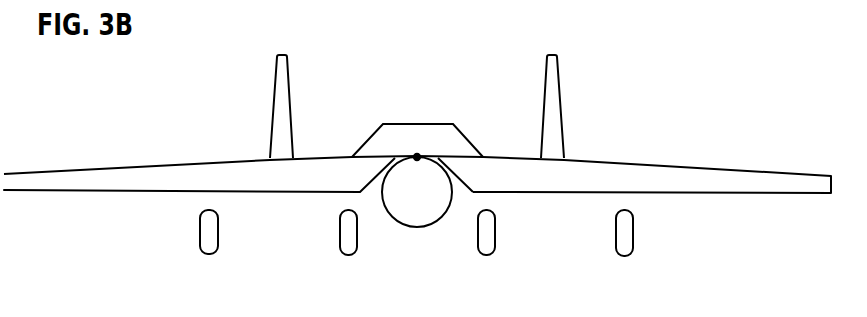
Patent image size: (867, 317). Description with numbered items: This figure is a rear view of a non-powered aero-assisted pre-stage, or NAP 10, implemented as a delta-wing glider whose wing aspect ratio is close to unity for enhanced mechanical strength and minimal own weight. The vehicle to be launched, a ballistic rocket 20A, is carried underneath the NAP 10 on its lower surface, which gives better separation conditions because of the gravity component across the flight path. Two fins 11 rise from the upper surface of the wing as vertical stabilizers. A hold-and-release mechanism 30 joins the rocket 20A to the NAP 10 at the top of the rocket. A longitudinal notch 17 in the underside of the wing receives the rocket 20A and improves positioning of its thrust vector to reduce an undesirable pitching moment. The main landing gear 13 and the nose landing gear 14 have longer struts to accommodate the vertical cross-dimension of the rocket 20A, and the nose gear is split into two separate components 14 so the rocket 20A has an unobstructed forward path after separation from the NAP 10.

The non-powered aero-assisted pre-stage (NAP) 10 is at (708, 168).
The vertical stabilizer 11 is at (289, 107).
The main landing gear 13 is at (200, 252).
The nose landing gear 14 is at (339, 247).
The longitudinal notch 17 is at (372, 185).
The ballistic rocket 20A is at (415, 224).
The hold-and-release mechanism 30 is at (417, 157).